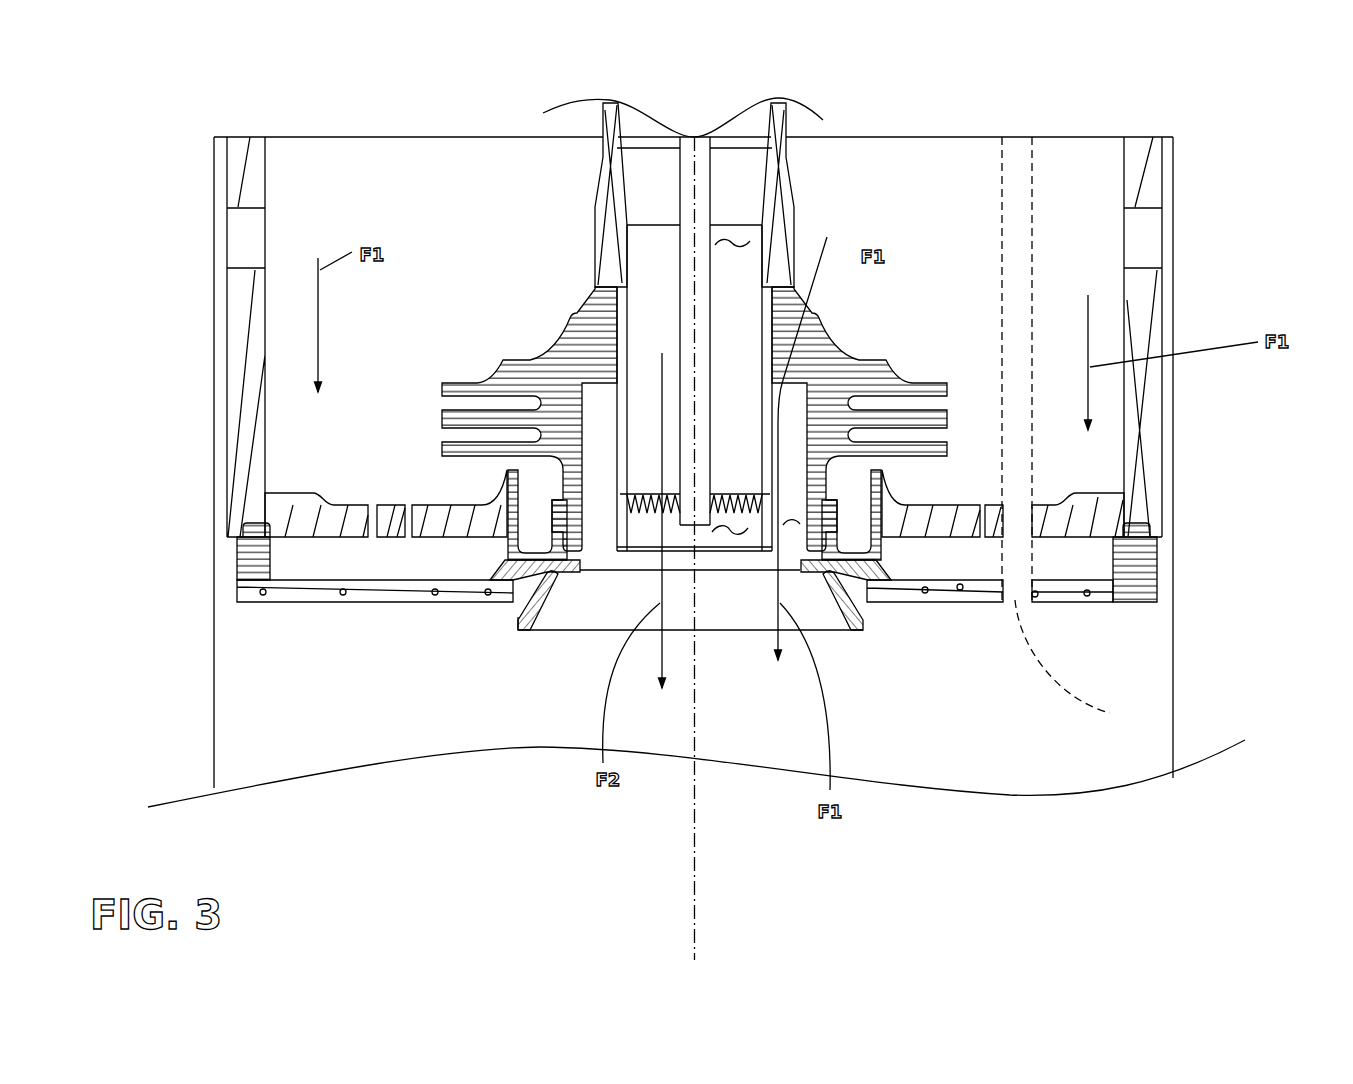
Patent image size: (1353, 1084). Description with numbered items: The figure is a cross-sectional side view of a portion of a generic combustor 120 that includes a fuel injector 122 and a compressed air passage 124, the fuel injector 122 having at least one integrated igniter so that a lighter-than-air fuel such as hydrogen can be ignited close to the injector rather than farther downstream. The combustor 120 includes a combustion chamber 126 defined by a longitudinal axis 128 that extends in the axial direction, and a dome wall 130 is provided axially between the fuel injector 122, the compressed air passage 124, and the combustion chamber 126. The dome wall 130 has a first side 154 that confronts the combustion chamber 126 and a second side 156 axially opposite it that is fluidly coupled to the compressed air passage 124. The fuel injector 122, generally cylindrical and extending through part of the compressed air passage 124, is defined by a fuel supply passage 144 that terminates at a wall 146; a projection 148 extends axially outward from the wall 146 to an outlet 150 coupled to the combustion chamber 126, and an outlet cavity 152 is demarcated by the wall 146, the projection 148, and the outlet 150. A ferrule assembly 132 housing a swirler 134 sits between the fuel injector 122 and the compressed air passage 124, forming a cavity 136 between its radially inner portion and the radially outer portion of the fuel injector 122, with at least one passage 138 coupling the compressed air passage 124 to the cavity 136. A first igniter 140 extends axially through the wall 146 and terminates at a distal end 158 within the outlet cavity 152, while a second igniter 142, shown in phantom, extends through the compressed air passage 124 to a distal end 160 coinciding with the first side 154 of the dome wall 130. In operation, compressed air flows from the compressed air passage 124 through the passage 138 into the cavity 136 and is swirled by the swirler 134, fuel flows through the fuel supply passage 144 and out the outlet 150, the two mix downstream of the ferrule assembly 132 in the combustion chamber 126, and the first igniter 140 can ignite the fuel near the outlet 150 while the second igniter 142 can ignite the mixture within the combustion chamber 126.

The combustor 120 is at (1166, 84).
The fuel injector 122 is at (597, 207).
The compressed air passage 124 is at (1046, 205).
The combustion chamber 126 is at (493, 702).
The longitudinal axis 128 is at (697, 863).
The dome wall 130 is at (1165, 579).
The ferrule assembly 132 is at (844, 342).
The swirler 134 is at (883, 407).
The cavity 136 is at (809, 545).
The passage 138 is at (593, 378).
The first igniter 140 is at (678, 167).
The second igniter 142 is at (1000, 200).
The fuel supply passage 144 is at (732, 237).
The wall 146 is at (643, 493).
The projection 148 is at (617, 525).
The outlet 150 is at (630, 550).
The outlet cavity 152 is at (730, 540).
The first side 154 is at (915, 603).
The second side 156 is at (942, 580).
The distal end 158 is at (687, 527).
The distal end 160 is at (1082, 665).